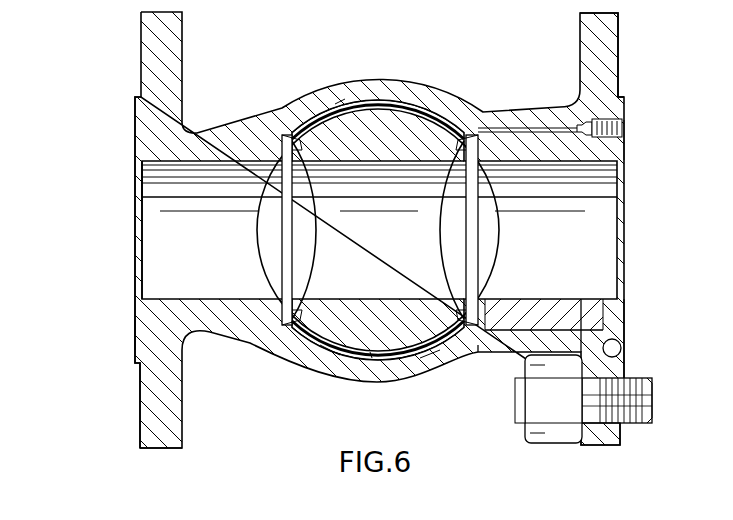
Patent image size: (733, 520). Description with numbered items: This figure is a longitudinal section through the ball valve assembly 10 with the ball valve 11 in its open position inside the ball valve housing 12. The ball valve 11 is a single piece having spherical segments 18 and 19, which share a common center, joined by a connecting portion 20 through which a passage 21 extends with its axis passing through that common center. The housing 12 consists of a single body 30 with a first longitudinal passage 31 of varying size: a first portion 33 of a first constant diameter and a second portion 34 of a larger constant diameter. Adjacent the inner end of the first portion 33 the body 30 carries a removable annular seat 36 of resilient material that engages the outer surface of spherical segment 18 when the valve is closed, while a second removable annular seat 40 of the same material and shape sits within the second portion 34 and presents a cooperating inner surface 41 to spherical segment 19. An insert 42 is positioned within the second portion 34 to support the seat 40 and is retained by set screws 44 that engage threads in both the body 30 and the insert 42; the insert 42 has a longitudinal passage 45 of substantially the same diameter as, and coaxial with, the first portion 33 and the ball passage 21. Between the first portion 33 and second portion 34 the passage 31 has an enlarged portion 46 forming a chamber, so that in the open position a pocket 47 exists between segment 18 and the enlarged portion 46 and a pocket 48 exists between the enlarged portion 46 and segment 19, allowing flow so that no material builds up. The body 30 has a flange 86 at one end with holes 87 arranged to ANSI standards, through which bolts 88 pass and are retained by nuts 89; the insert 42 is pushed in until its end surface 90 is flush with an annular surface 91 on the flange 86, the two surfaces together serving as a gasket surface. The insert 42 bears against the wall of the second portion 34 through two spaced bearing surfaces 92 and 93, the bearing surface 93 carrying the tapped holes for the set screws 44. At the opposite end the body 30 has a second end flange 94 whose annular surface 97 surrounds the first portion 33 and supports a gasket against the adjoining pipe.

The ball valve assembly 10 is at (113, 405).
The ball valve 11 is at (333, 354).
The ball valve housing 12 is at (260, 356).
The spherical segment 18 is at (338, 106).
The spherical segment 19 is at (427, 370).
The connecting portion 20 is at (312, 254).
The passage 21 is at (282, 181).
The body 30 is at (134, 369).
The first longitudinal passage 31 is at (165, 166).
The first portion 33 is at (165, 300).
The second portion 34 is at (527, 330).
The removable annular seat 36 is at (283, 237).
The second removable annular seat 40 is at (478, 248).
The cooperating inner surface 41 is at (446, 171).
The insert 42 is at (630, 311).
The set screws 44 is at (625, 128).
The longitudinal passage 45 is at (580, 303).
The enlarged portion 46 is at (373, 359).
The pocket 47 is at (393, 107).
The pocket 48 is at (393, 358).
The flange 86 is at (620, 46).
The holes 87 is at (626, 422).
The bolts 88 is at (653, 402).
The nuts 89 is at (556, 446).
The end surface 90 is at (626, 141).
The annular surface 91 is at (624, 102).
The bearing surface 92 is at (473, 358).
The bearing surface 93 is at (627, 352).
The second end flange 94 is at (152, 450).
The annular surface 97 is at (134, 337).